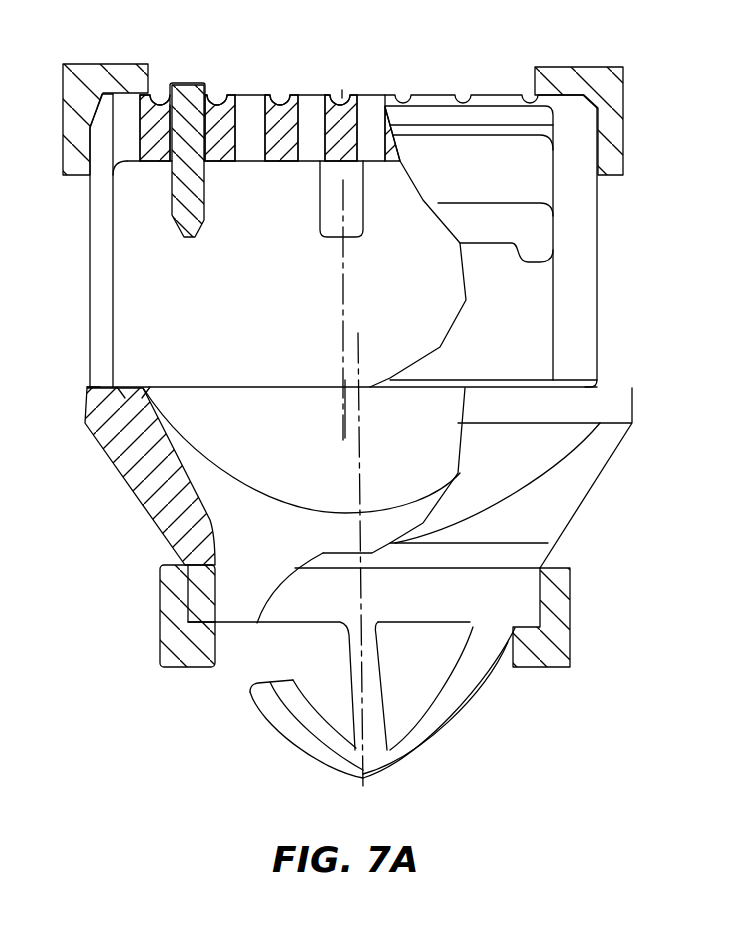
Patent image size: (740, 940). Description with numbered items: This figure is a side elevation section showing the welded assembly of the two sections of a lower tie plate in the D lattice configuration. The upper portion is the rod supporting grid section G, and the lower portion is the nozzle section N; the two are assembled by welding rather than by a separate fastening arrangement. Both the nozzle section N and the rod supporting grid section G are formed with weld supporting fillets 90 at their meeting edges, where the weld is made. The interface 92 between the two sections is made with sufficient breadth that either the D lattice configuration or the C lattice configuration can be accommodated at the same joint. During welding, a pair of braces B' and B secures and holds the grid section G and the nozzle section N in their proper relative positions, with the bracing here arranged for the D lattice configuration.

The brace B is at (343, 102).
The brace B' is at (368, 616).
The rod supporting grid section G is at (465, 90).
The nozzle section N is at (153, 521).
The weld supporting fillet 90 is at (90, 387).
The interface 92 is at (119, 387).